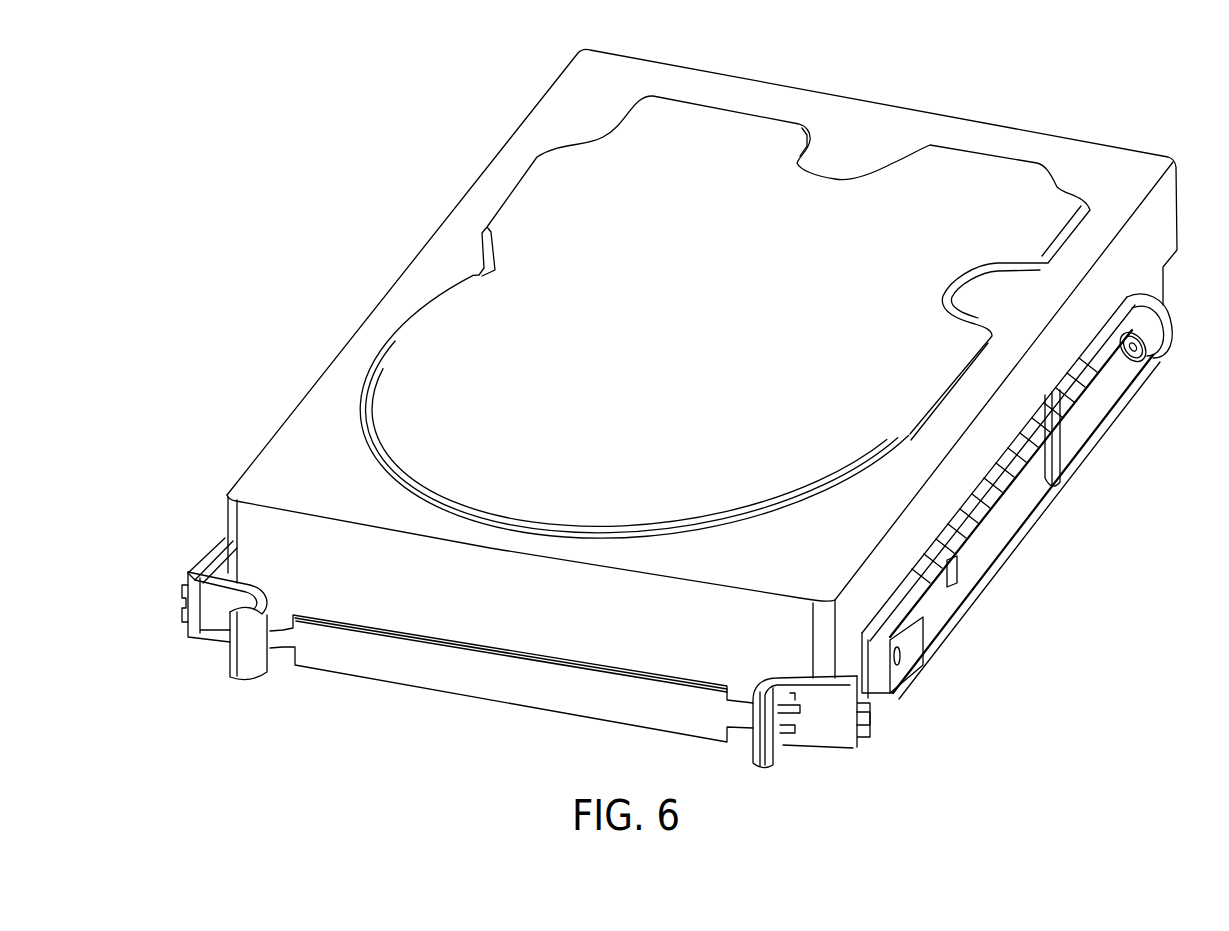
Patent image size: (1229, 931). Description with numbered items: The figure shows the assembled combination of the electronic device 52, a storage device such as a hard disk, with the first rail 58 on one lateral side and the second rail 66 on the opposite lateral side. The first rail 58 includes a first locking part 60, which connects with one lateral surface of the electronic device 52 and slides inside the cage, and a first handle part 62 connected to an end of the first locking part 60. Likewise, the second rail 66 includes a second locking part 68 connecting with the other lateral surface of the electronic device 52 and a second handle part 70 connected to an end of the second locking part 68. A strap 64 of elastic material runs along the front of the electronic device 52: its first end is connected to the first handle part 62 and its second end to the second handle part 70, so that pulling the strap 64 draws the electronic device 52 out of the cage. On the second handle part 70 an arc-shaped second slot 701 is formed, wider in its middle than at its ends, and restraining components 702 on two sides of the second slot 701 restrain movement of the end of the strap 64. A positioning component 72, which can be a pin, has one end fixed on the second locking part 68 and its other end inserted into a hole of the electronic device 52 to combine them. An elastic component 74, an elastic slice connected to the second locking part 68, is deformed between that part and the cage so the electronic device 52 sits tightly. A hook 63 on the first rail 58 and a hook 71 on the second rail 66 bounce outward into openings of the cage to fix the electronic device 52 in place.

The electronic device 52 is at (572, 98).
The first rail 58 is at (140, 590).
The first locking part 60 is at (218, 541).
The first handle part 62 is at (232, 625).
The hook 63 is at (183, 603).
The strap 64 is at (490, 712).
The second rail 66 is at (955, 708).
The second locking part 68 is at (883, 702).
The second handle part 70 is at (775, 768).
The second slot 701 is at (802, 722).
The restraining components 702 is at (797, 727).
The hook 71 is at (863, 717).
The positioning component 72 is at (1130, 372).
The elastic component 74 is at (915, 655).